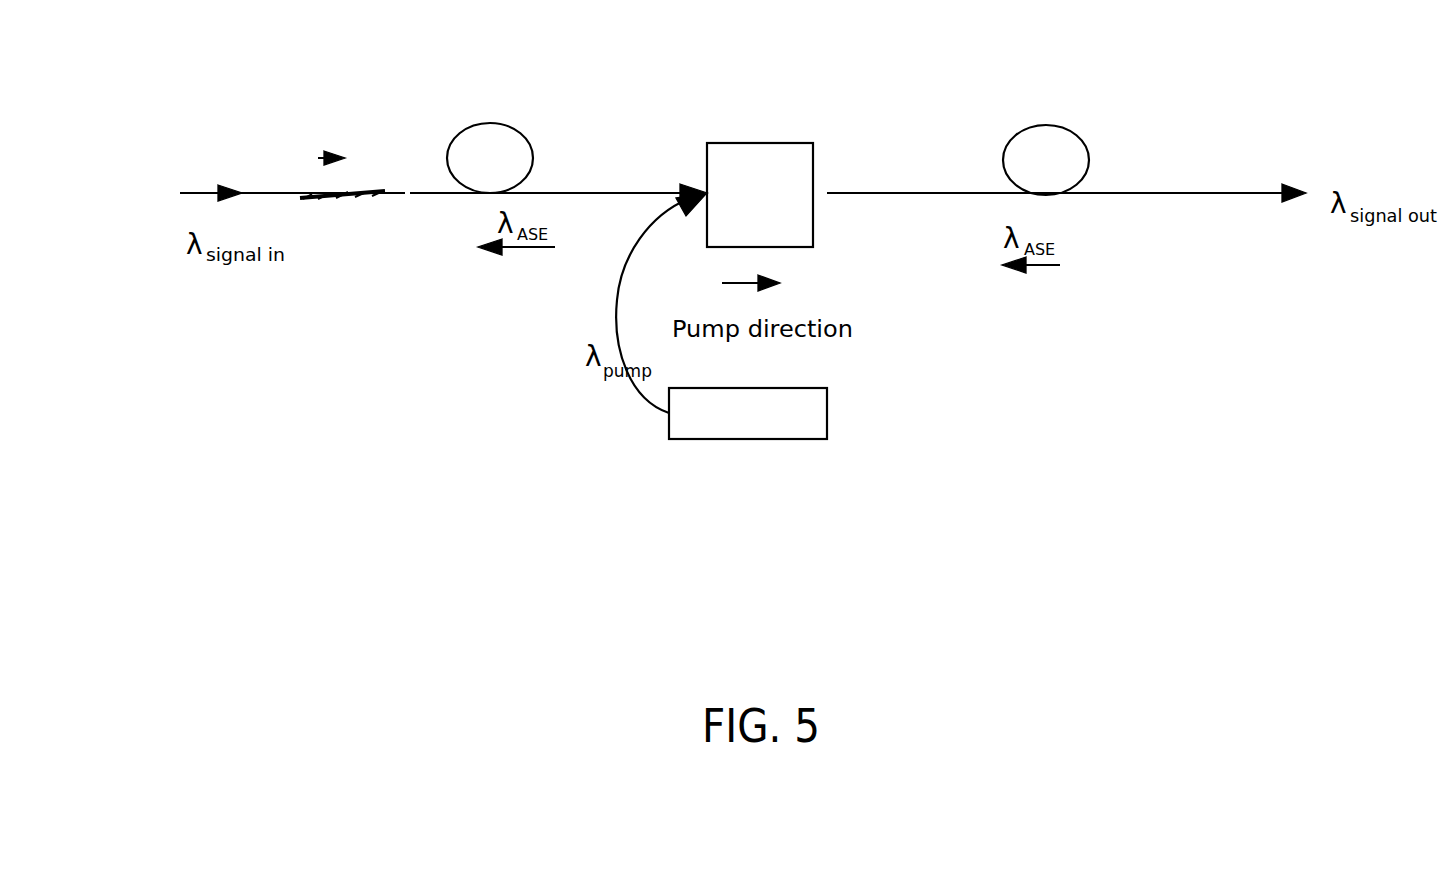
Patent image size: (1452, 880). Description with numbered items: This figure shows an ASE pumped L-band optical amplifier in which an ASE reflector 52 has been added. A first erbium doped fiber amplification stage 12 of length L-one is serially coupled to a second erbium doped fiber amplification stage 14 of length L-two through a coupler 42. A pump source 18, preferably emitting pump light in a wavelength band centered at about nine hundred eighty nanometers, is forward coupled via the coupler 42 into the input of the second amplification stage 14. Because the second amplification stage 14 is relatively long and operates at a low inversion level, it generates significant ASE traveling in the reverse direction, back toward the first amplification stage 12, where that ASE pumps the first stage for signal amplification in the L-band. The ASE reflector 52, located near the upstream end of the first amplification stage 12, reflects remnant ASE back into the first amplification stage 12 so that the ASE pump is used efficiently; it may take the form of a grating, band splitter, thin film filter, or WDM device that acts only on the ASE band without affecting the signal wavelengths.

The ASE reflector 52 is at (357, 132).
The first erbium doped fiber amplification stage 12 is at (505, 141).
The coupler 42 is at (760, 139).
The second erbium doped fiber amplification stage 14 is at (1053, 141).
The pump source 18 is at (728, 344).